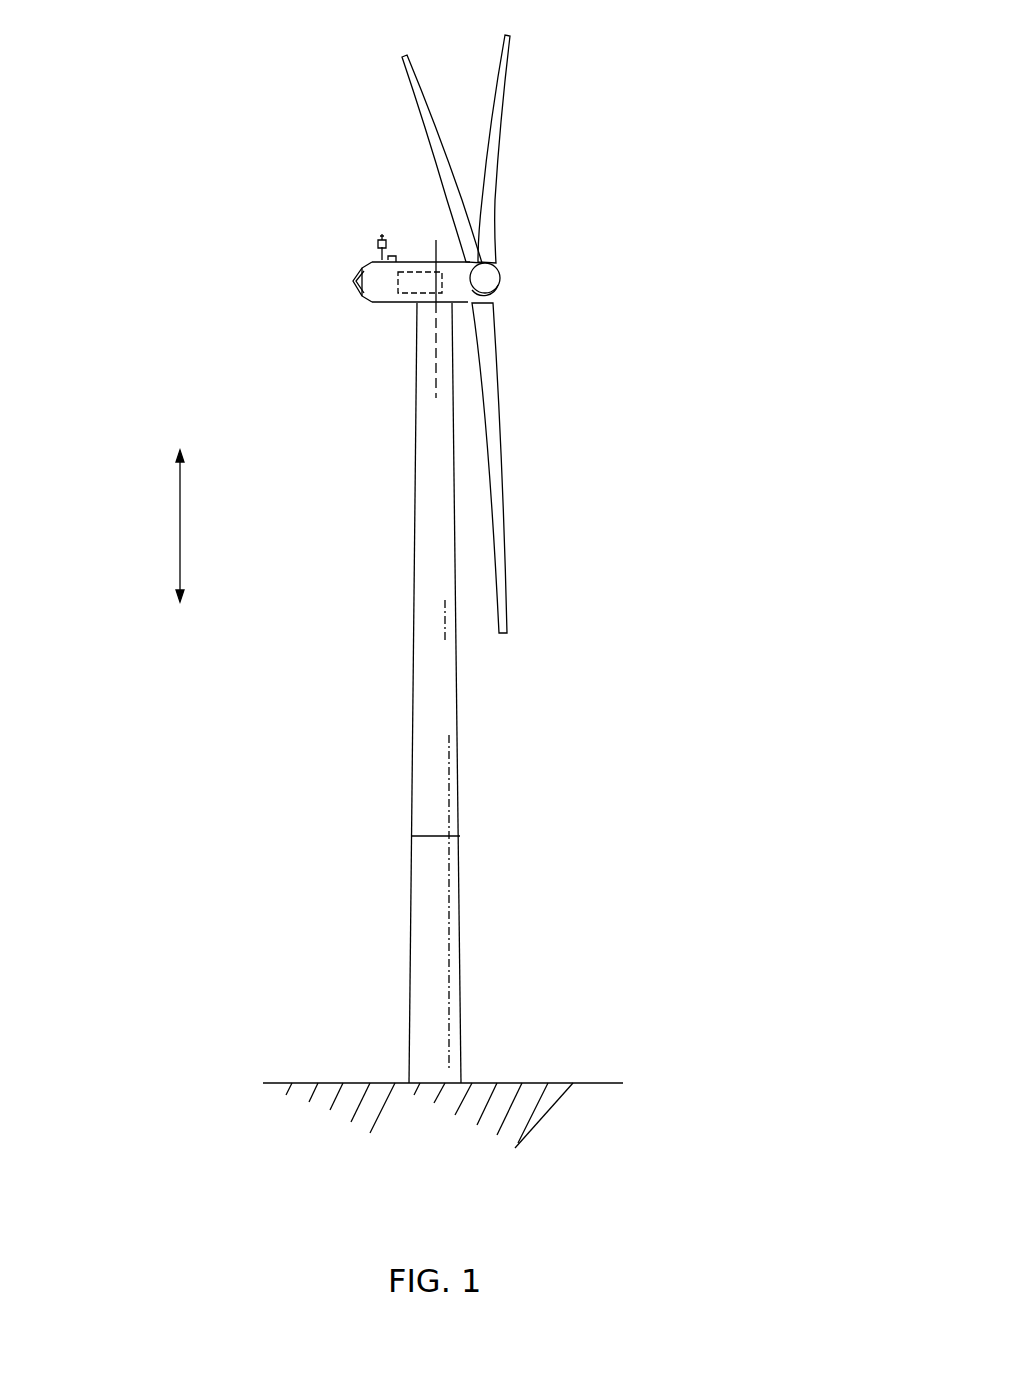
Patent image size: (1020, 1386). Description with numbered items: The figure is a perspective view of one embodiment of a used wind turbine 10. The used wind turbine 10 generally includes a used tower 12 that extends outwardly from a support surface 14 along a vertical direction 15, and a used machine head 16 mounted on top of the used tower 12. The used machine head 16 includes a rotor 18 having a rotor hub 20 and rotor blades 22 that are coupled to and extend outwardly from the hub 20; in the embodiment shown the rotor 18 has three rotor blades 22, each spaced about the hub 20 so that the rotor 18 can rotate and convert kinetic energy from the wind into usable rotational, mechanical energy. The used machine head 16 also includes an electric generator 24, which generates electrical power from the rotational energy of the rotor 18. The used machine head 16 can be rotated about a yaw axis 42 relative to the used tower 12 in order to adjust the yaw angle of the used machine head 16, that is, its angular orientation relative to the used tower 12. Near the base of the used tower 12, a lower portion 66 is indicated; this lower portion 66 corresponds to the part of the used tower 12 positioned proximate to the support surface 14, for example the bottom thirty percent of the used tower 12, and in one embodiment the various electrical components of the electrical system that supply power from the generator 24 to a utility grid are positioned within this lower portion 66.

The used wind turbine 10 is at (783, 101).
The used tower 12 is at (424, 804).
The support surface 14 is at (343, 1083).
The vertical direction 15 is at (180, 527).
The used machine head 16 is at (395, 303).
The rotor 18 is at (498, 333).
The rotor hub 20 is at (498, 280).
The rotor blade 22 is at (498, 73).
The electric generator 24 is at (417, 270).
The yaw axis 42 is at (435, 378).
The lower portion 66 is at (437, 973).